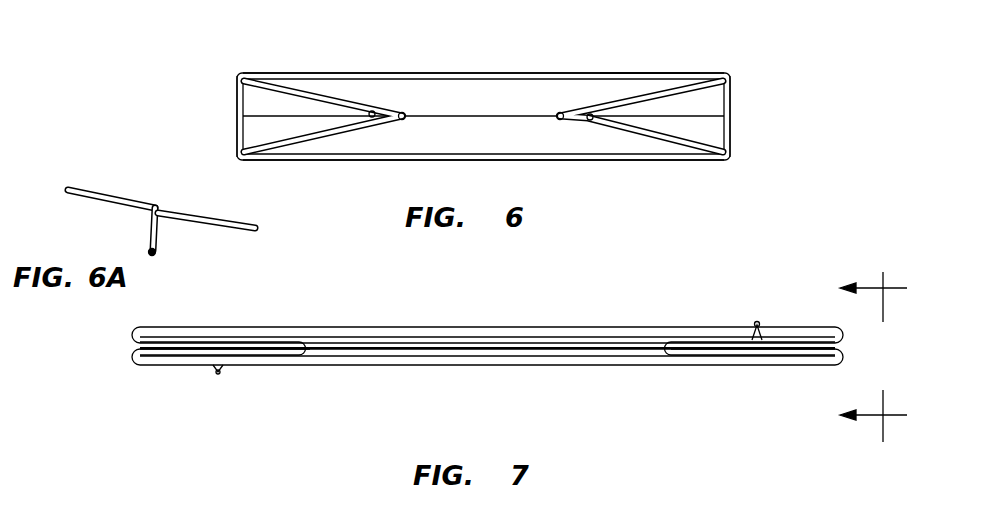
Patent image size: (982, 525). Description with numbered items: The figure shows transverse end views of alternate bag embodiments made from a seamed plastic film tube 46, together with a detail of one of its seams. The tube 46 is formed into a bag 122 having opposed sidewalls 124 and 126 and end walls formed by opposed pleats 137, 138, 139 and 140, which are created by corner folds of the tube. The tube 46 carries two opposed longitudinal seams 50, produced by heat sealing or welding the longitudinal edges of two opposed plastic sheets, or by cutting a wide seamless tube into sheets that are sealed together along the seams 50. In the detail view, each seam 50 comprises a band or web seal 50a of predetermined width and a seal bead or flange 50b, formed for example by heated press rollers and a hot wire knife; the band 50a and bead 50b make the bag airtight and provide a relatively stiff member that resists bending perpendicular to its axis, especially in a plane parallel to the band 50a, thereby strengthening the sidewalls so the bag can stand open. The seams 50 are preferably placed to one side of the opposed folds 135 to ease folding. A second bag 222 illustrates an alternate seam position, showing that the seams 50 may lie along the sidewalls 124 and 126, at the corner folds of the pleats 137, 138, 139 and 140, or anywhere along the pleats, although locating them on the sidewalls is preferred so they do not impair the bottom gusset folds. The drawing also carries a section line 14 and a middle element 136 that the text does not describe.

In FIG. 6, the bag 122 is at (696, 65).
In FIG. 7, the bag 222 is at (552, 320).
In FIG. 6, the sidewall 126 is at (497, 73).
In FIG. 7, the sidewall 126 is at (477, 327).
In FIG. 6, the sidewall 124 is at (540, 160).
In FIG. 7, the sidewall 124 is at (455, 366).
In FIG. 6, the middle bar 136 is at (497, 116).
In FIG. 7, the middle bar 136 is at (433, 346).
In FIG. 6, the seamed plastic tube 46 is at (652, 73).
In FIG. 6, the pleat 139 is at (258, 90).
In FIG. 6A, the pleat 139 is at (105, 205).
In FIG. 7, the pleat 139 is at (250, 341).
In FIG. 6, the pleat 140 is at (255, 136).
In FIG. 7, the pleat 140 is at (178, 352).
In FIG. 6, the pleat 137 is at (718, 92).
In FIG. 7, the pleat 137 is at (800, 342).
In FIG. 6, the pleat 138 is at (720, 139).
In FIG. 7, the pleat 138 is at (752, 356).
In FIG. 6, the longitudinal seam 50 is at (370, 112).
In FIG. 6A, the longitudinal seam 50 is at (148, 243).
In FIG. 7, the longitudinal seam 50 is at (218, 372).
In FIG. 6A, the band or web seal 50a is at (165, 228).
In FIG. 6A, the seal bead or flange 50b is at (160, 253).
In FIG. 6, the fold 135 is at (406, 117).
In FIG. 7, the section line 14- 14 is at (877, 355).